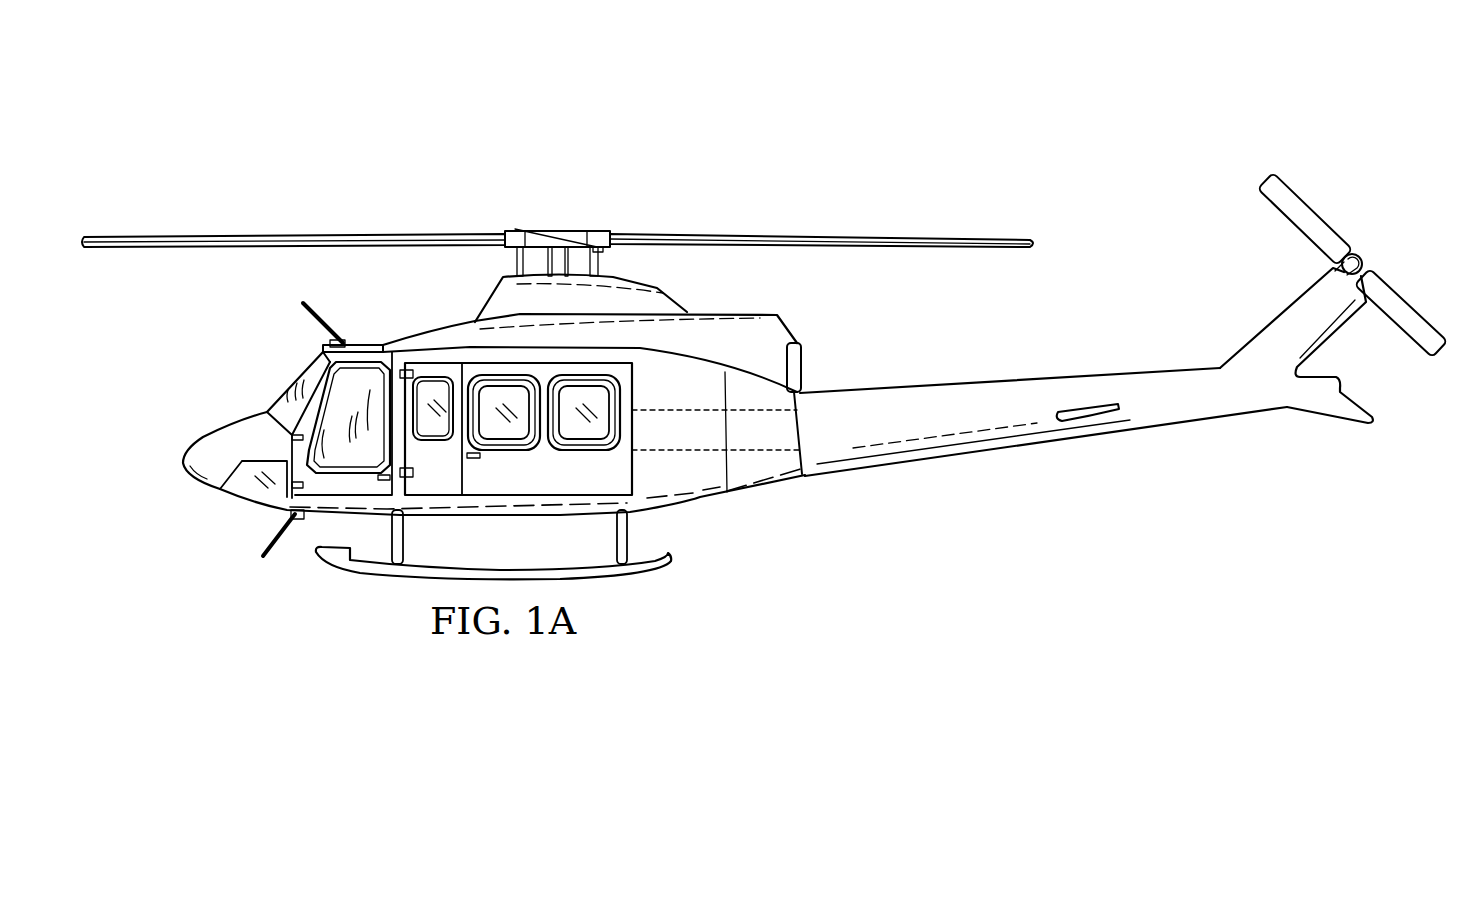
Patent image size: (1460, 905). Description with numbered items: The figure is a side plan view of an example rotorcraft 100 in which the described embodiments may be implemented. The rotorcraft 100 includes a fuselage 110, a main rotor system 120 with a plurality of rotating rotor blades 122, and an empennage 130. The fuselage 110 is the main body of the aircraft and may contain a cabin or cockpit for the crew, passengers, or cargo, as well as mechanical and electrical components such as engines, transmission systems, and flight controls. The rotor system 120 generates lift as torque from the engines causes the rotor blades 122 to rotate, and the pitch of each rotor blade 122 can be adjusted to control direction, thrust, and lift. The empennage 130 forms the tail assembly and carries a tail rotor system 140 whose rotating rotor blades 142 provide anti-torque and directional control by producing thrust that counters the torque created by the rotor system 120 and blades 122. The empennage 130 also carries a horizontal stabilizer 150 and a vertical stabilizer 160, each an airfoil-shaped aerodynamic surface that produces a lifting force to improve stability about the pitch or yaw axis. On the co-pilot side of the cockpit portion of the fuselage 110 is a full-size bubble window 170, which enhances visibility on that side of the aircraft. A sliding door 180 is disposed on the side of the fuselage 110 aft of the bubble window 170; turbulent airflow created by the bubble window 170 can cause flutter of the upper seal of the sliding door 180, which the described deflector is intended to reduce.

The rotorcraft 100 is at (442, 93).
The fuselage 110 is at (696, 502).
The rotor system 120 is at (532, 210).
The rotor blades 122 is at (872, 236).
The empennage 130 is at (968, 454).
The tail rotor system 140 is at (1372, 236).
The rotor blades 142 is at (1407, 297).
The horizontal stabilizer 150 is at (1082, 424).
The vertical stabilizer 160 is at (1277, 317).
The bubble window 170 is at (358, 397).
The sliding door 180 is at (513, 477).